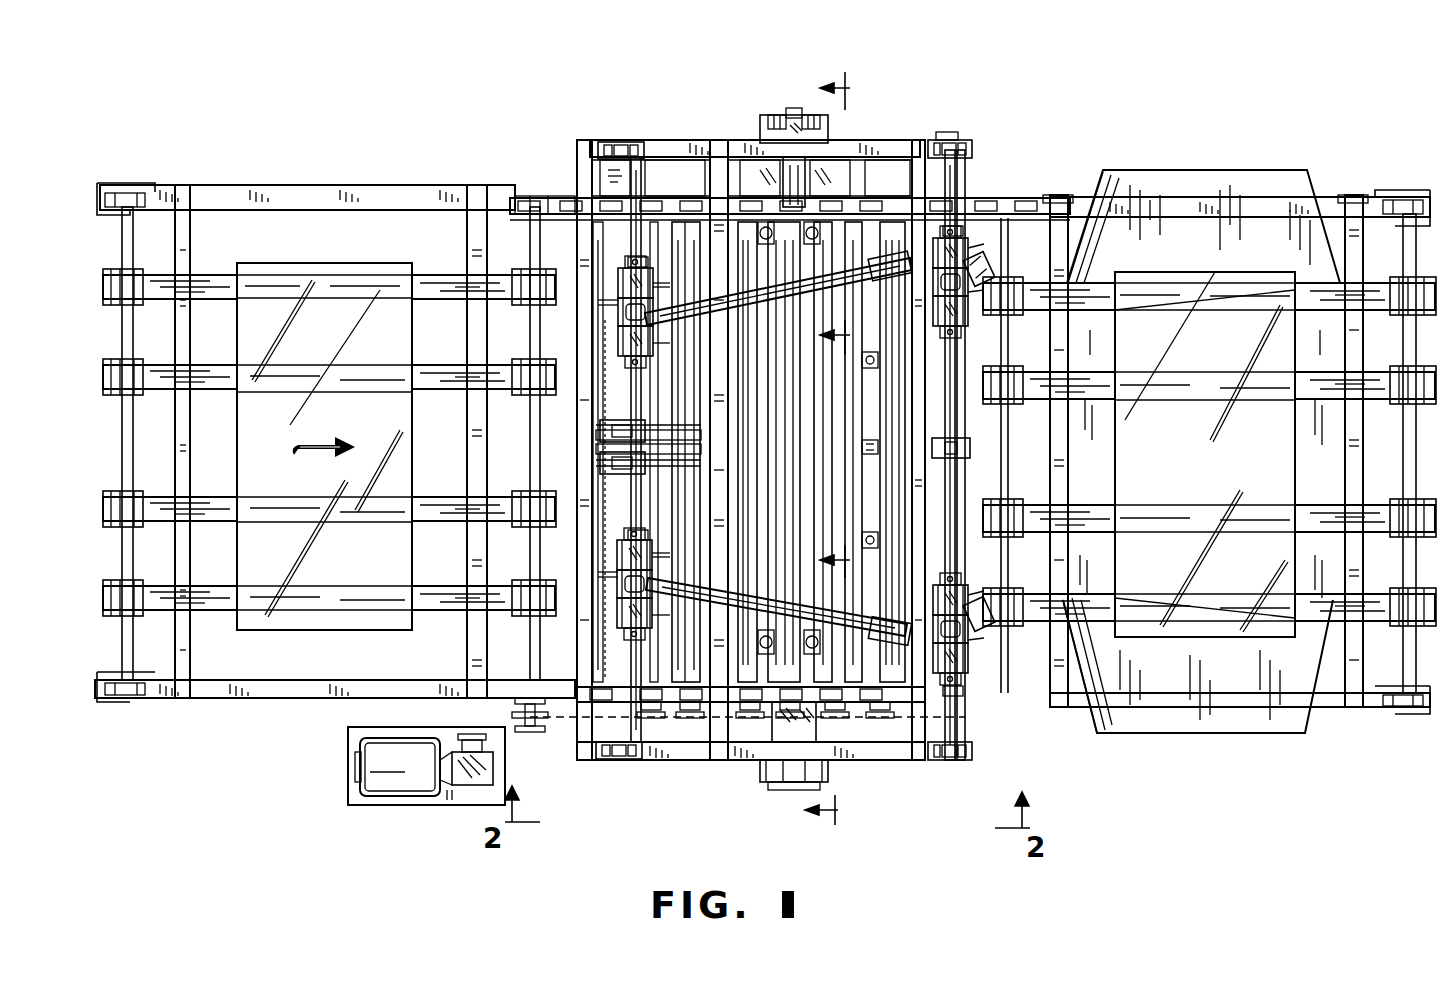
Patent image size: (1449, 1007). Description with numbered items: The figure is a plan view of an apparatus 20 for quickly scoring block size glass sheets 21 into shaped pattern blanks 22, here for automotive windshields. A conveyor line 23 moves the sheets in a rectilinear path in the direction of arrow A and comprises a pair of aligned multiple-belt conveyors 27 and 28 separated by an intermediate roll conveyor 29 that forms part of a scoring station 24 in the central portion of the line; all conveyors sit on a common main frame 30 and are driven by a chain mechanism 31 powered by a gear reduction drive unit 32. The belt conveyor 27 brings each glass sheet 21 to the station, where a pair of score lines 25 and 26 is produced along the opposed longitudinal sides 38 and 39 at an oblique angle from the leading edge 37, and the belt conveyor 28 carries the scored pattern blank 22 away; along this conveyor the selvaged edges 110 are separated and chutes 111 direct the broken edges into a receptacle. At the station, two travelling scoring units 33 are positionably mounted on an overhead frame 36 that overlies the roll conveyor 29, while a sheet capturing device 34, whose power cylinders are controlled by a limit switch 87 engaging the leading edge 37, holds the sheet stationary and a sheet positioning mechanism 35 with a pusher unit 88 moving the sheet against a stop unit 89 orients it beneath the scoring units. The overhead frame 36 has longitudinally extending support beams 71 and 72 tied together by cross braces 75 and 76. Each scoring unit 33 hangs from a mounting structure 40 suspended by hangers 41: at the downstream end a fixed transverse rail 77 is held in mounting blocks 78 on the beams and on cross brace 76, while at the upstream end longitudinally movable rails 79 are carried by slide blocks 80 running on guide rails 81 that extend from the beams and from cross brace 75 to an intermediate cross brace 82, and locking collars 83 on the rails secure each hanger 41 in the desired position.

The apparatus 20 is at (790, 442).
The block size glass sheet 21 is at (324, 451).
The pattern blank 22 is at (1205, 459).
The conveyor line 23 is at (276, 186).
The scoring station 24 is at (868, 140).
The score line 25 is at (1212, 285).
The score line 26 is at (1210, 640).
The multiple-belt conveyor 27 is at (104, 395).
The multiple-belt conveyor 28 is at (1330, 500).
The roll conveyor 29 is at (707, 228).
The main frame 30 is at (262, 698).
The chain mechanism 31 is at (548, 718).
The gear reduction drive unit 32 is at (368, 800).
The scoring unit 33 is at (874, 256).
The sheet capturing device 34 is at (872, 366).
The sheet positioning mechanism 35 is at (770, 118).
The overhead frame 36 is at (732, 762).
The leading edge 37 is at (418, 478).
The longitudinal side 38 is at (305, 262).
The longitudinal side 39 is at (284, 632).
The mounting structure 40 is at (748, 315).
The hanger 41 is at (612, 270).
The support beam 71 is at (736, 140).
The support beam 72 is at (885, 760).
The cross brace 75 is at (578, 172).
The cross brace 76 is at (924, 142).
The rail 77 is at (962, 480).
The mounting block 78 is at (972, 146).
The movable rail 79 is at (640, 196).
The slide block 80 is at (620, 140).
The guide rail 81 is at (597, 140).
The intermediate cross brace 82 is at (722, 470).
The locking collar 83 is at (648, 262).
The limit switch 87 is at (862, 450).
The pusher unit 88 is at (812, 115).
The stop unit 89 is at (814, 766).
The selvaged edge 110 is at (1140, 272).
The chute 111 is at (1143, 172).
The arrow A is at (300, 455).